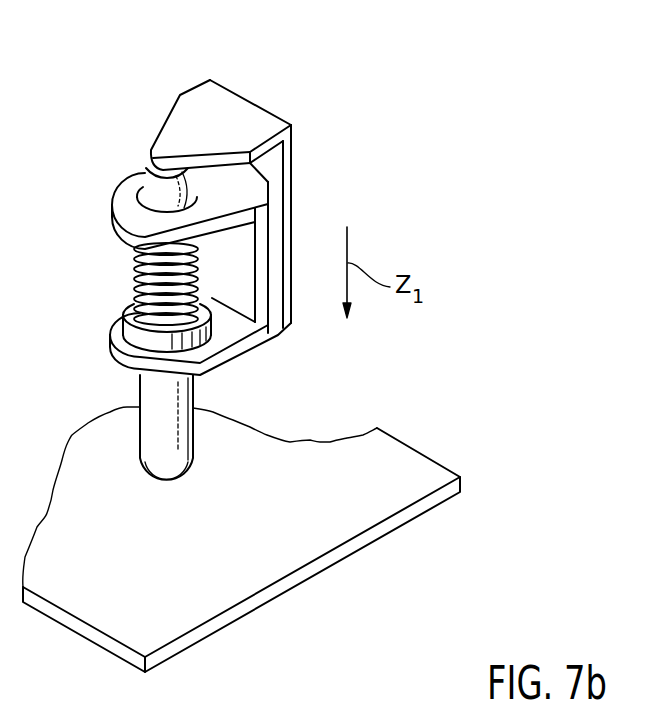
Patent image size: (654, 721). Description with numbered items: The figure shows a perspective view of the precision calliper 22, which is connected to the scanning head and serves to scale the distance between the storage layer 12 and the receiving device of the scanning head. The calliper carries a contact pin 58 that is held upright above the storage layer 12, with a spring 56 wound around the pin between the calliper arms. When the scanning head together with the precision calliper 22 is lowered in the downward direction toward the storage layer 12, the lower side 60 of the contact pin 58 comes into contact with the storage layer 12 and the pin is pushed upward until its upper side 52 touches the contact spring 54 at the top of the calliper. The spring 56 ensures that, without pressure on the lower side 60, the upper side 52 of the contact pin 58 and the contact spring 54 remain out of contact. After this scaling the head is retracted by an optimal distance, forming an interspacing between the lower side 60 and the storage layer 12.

The storage layer 12 is at (345, 453).
The precision calliper 22 is at (365, 100).
The upper side of the contact pin 52 is at (143, 182).
The contact spring 54 is at (222, 96).
The spring 56 is at (133, 290).
The contact pin 58 is at (193, 440).
The lower side of the contact pin 60 is at (167, 486).